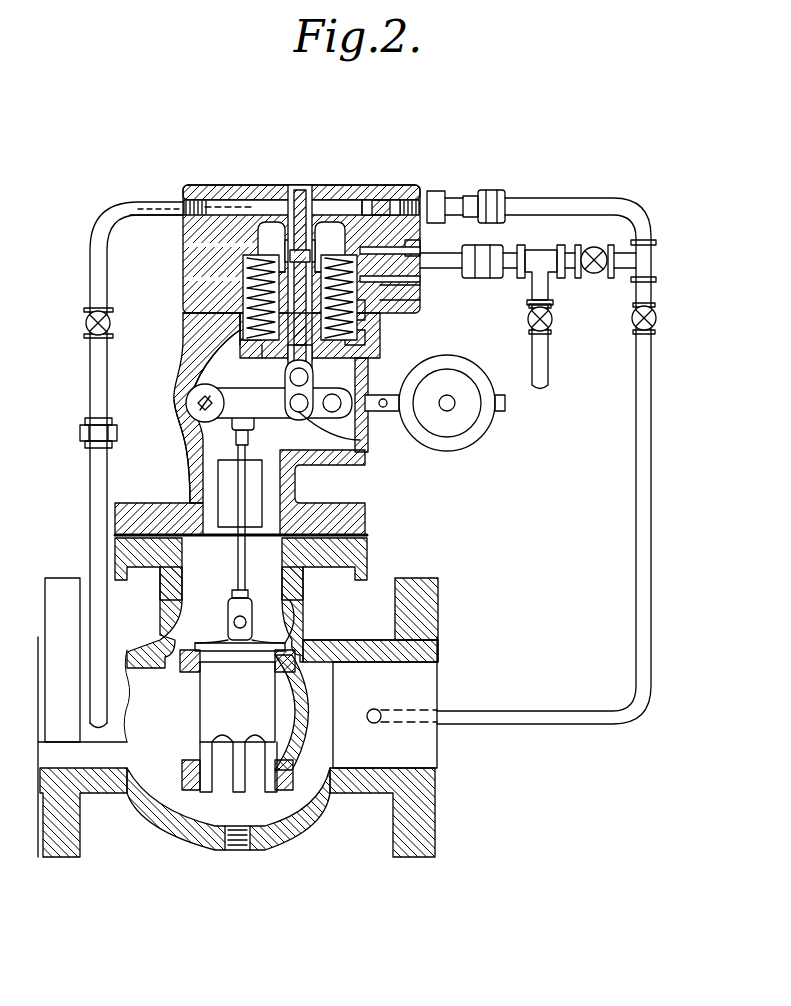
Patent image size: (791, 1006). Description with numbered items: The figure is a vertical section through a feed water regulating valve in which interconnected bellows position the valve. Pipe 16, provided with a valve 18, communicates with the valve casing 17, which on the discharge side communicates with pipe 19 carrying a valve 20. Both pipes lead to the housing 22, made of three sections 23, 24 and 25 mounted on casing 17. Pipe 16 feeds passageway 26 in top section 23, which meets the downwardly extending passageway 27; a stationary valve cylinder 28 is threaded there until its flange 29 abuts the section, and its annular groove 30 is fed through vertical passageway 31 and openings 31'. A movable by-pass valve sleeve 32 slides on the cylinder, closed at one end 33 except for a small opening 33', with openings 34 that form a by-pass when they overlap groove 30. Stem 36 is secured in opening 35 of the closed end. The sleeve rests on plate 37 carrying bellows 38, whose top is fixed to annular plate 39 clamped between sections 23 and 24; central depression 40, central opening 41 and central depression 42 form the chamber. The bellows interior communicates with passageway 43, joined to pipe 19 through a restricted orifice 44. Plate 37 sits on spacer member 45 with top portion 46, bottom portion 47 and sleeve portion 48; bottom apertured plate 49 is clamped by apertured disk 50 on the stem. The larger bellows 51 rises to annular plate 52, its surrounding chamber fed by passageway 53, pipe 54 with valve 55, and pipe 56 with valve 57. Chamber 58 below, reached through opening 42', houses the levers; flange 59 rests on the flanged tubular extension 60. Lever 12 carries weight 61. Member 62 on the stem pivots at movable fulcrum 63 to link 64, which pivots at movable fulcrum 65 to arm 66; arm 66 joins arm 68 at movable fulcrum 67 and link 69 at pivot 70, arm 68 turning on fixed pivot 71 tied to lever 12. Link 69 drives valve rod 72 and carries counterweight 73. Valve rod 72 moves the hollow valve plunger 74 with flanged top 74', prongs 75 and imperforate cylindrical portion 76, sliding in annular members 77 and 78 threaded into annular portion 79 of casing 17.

The lever 12 is at (380, 411).
The pipe 16 is at (90, 388).
The valve casing 17 is at (62, 858).
The valve 18 is at (84, 323).
The pipe 19 is at (651, 478).
The valve 20 is at (657, 318).
The housing 22 is at (379, 170).
The top section 23 is at (196, 196).
The section 24 is at (185, 207).
The section 25 is at (230, 290).
The passageway 26 is at (262, 222).
The downwardly extending passageway 27 is at (328, 222).
The stationary valve cylinder 28 is at (286, 240).
The flange 29 is at (382, 200).
The annular groove 30 is at (302, 200).
The vertical passageway 31 is at (290, 210).
The openings 31' is at (195, 266).
The movable by-pass valve sleeve 32 is at (448, 190).
The closed end 33 is at (193, 344).
The small opening 33' is at (183, 322).
The openings 34 is at (420, 200).
The opening 35 is at (222, 335).
The stem 36 is at (365, 355).
The plate 37 is at (405, 312).
The bellows 38 is at (420, 300).
The annular plate 39 is at (185, 208).
The central depression 40 is at (265, 215).
The central opening 41 is at (180, 222).
The central depression 42 is at (210, 345).
The opening 42' is at (174, 412).
The passageway 43 is at (372, 200).
The restricted orifice 44 is at (410, 200).
The spacer member 45 is at (362, 318).
The top portion 46 is at (380, 272).
The bottom portion 47 is at (261, 297).
The sleeve portion 48 is at (339, 297).
The bottom apertured plate 49 is at (362, 338).
The apertured disk 50 is at (186, 397).
The bellows 51 is at (238, 322).
The annular plate 52 is at (135, 210).
The passageway 53 is at (420, 248).
The pipe 54 is at (462, 270).
The valve 55 is at (598, 248).
The pipe 56 is at (549, 296).
The valve 57 is at (553, 319).
The chamber 58 is at (320, 458).
The flange 59 is at (360, 515).
The flanged tubular extension 60 is at (355, 552).
The weight 61 is at (480, 430).
The member 62 is at (290, 378).
The movable fulcrum 63 is at (308, 377).
The link 64 is at (285, 388).
The movable fulcrum 65 is at (362, 440).
The arm 66 is at (250, 420).
The movable fulcrum 67 is at (341, 403).
The arm 68 is at (340, 430).
The link 69 is at (196, 470).
The pivot 70 is at (188, 440).
The fixed pivot 71 is at (207, 407).
The valve rod 72 is at (238, 440).
The counterweight 73 is at (230, 512).
The valve plunger 74 is at (395, 522).
The flanged top 74' is at (326, 611).
The prongs 75 is at (205, 792).
The imperforate cylindrical portion 76 is at (210, 710).
The annular member 77 is at (222, 650).
The annular member 78 is at (285, 800).
The annular portion 79 is at (310, 740).